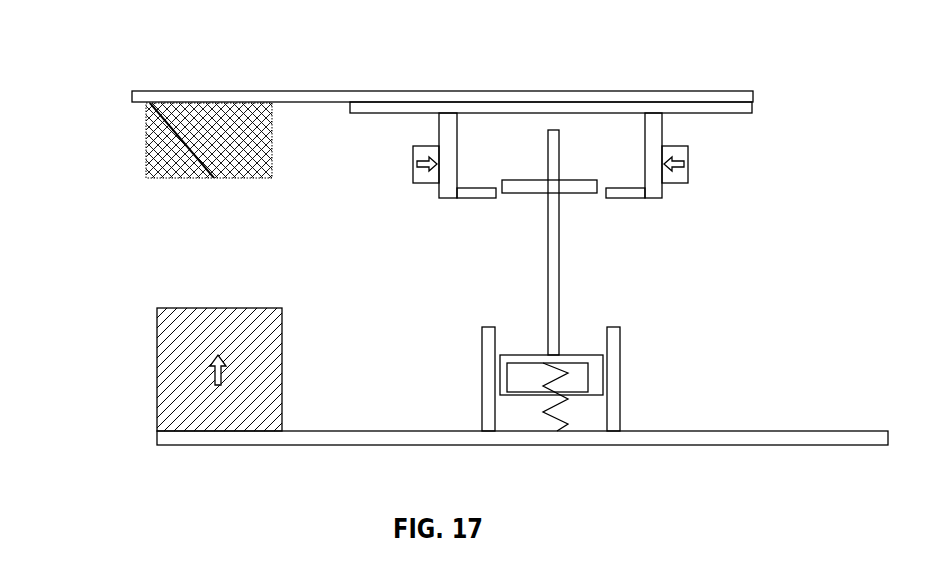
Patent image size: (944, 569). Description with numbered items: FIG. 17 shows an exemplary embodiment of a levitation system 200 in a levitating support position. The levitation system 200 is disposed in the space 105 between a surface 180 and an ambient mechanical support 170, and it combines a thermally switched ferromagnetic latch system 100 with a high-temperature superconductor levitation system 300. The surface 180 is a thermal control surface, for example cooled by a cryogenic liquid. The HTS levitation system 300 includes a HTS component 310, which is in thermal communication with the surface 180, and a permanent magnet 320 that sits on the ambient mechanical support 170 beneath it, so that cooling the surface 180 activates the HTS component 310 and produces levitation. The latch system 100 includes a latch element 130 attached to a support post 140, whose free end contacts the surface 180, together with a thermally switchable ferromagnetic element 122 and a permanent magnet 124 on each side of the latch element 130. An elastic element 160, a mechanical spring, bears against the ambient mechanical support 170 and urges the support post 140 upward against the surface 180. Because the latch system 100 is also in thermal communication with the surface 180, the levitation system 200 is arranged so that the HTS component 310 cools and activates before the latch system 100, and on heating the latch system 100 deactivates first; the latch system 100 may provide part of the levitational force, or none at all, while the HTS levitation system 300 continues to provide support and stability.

The latch system 100 is at (776, 168).
The space 105 is at (847, 302).
The thermally switchable ferromagnetic element 122 is at (652, 198).
The permanent magnet 124 is at (688, 165).
The latch element 130 is at (528, 193).
The support post 140 is at (559, 250).
The elastic element 160 is at (563, 400).
The ambient mechanical support 170 is at (447, 447).
The surface 180 is at (325, 91).
The levitation system 200 is at (153, 40).
The HTS levitation system 300 is at (120, 245).
The HTS component 310 is at (146, 140).
The permanent magnet 320 is at (158, 370).